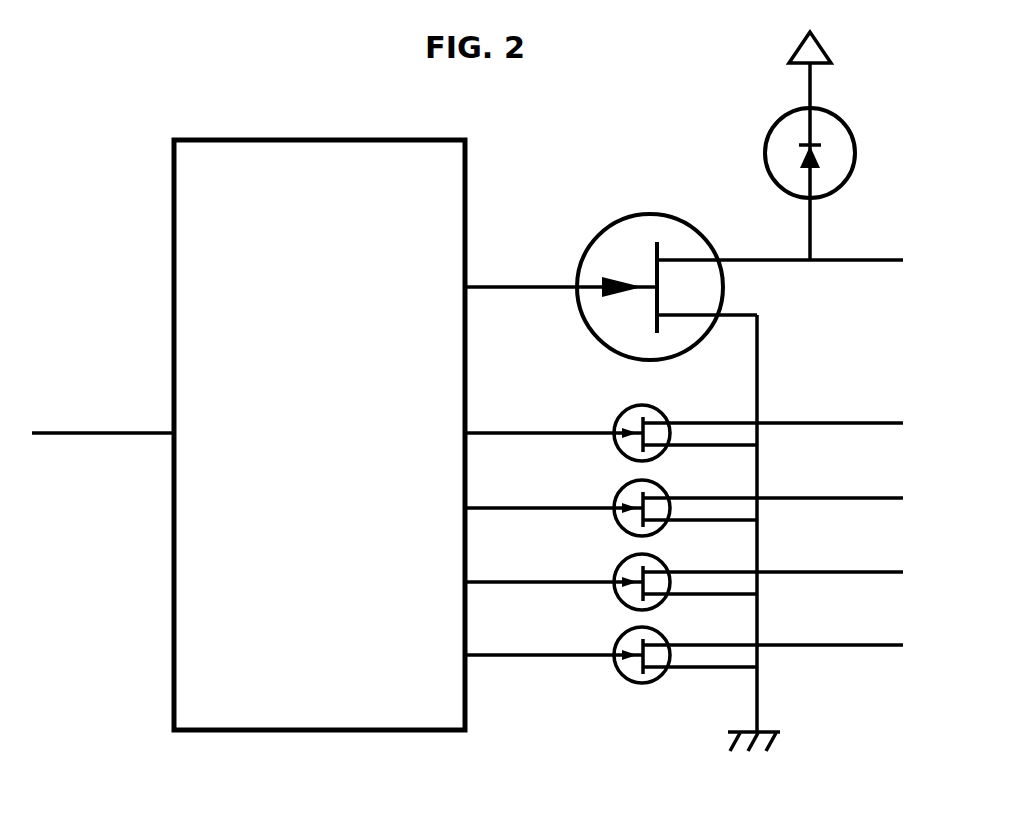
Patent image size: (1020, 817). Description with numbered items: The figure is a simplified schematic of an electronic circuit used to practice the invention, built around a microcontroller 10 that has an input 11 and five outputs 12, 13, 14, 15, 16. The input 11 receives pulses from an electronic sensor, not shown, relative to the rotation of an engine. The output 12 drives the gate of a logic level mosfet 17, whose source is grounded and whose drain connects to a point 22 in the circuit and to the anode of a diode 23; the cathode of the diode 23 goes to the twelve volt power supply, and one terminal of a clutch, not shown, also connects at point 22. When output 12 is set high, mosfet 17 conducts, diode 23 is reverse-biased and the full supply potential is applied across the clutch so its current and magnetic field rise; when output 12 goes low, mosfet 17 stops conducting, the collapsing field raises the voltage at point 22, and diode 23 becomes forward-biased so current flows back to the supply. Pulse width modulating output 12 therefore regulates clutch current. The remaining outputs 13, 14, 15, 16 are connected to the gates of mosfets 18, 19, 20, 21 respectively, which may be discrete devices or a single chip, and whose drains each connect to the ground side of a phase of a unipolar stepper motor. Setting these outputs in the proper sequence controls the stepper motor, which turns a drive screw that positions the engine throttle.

The microcontroller 10 is at (331, 457).
The input 11 is at (173, 429).
The output 12 is at (469, 284).
The output 13 is at (469, 431).
The output 14 is at (469, 506).
The output 15 is at (469, 580).
The output 16 is at (469, 653).
The mosfet 17 is at (601, 234).
The mosfet 18 is at (619, 413).
The mosfet 19 is at (619, 490).
The mosfet 20 is at (619, 565).
The mosfet 21 is at (619, 639).
The point 22 is at (901, 258).
The diode 23 is at (778, 121).